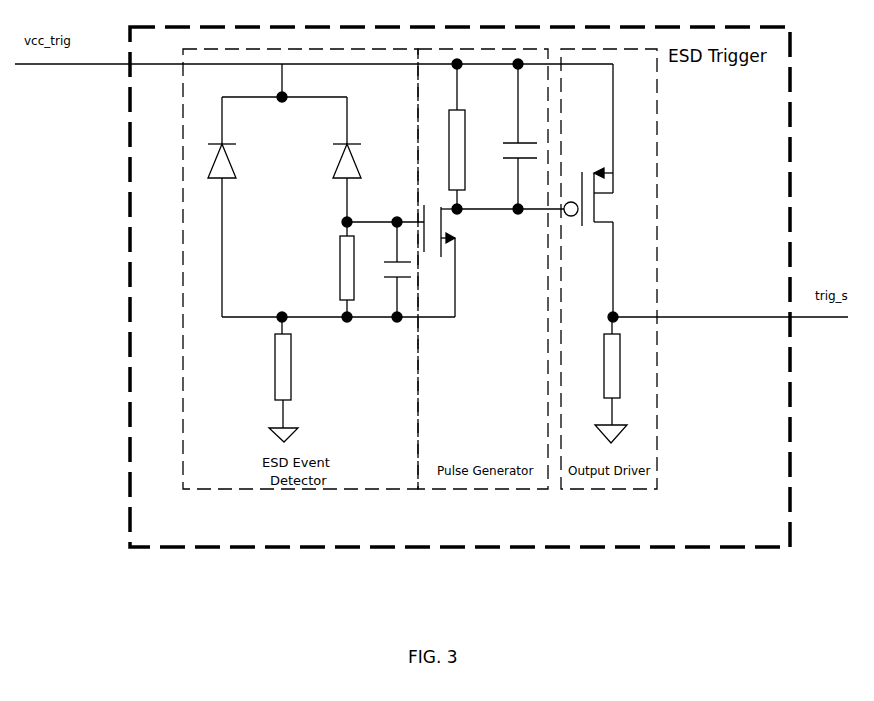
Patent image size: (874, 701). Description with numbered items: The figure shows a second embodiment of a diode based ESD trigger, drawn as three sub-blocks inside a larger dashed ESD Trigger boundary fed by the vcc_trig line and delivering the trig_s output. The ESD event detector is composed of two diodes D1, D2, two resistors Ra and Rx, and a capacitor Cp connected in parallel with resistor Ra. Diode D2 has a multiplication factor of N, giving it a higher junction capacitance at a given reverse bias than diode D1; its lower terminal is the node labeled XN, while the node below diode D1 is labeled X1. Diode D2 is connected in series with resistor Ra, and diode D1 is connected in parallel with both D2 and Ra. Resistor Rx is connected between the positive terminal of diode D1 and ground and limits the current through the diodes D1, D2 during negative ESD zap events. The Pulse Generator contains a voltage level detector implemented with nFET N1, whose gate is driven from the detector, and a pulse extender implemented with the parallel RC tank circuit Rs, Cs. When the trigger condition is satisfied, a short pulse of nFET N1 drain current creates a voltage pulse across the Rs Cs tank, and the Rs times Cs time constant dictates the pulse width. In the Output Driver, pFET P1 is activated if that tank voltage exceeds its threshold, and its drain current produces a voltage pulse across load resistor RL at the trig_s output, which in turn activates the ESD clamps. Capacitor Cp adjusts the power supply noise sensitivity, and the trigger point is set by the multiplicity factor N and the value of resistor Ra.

The diode D1 is at (213, 137).
The diode D2 is at (338, 137).
The first diode node X1 is at (207, 247).
The Nth diode node XN is at (368, 202).
The resistor Ra is at (357, 269).
The capacitor Cp is at (391, 269).
The resistor Rx is at (294, 379).
The resistor Rs is at (468, 136).
The capacitor Cs is at (513, 136).
The nFET N1 is at (450, 261).
The pFET P1 is at (601, 242).
The resistor RL is at (621, 380).